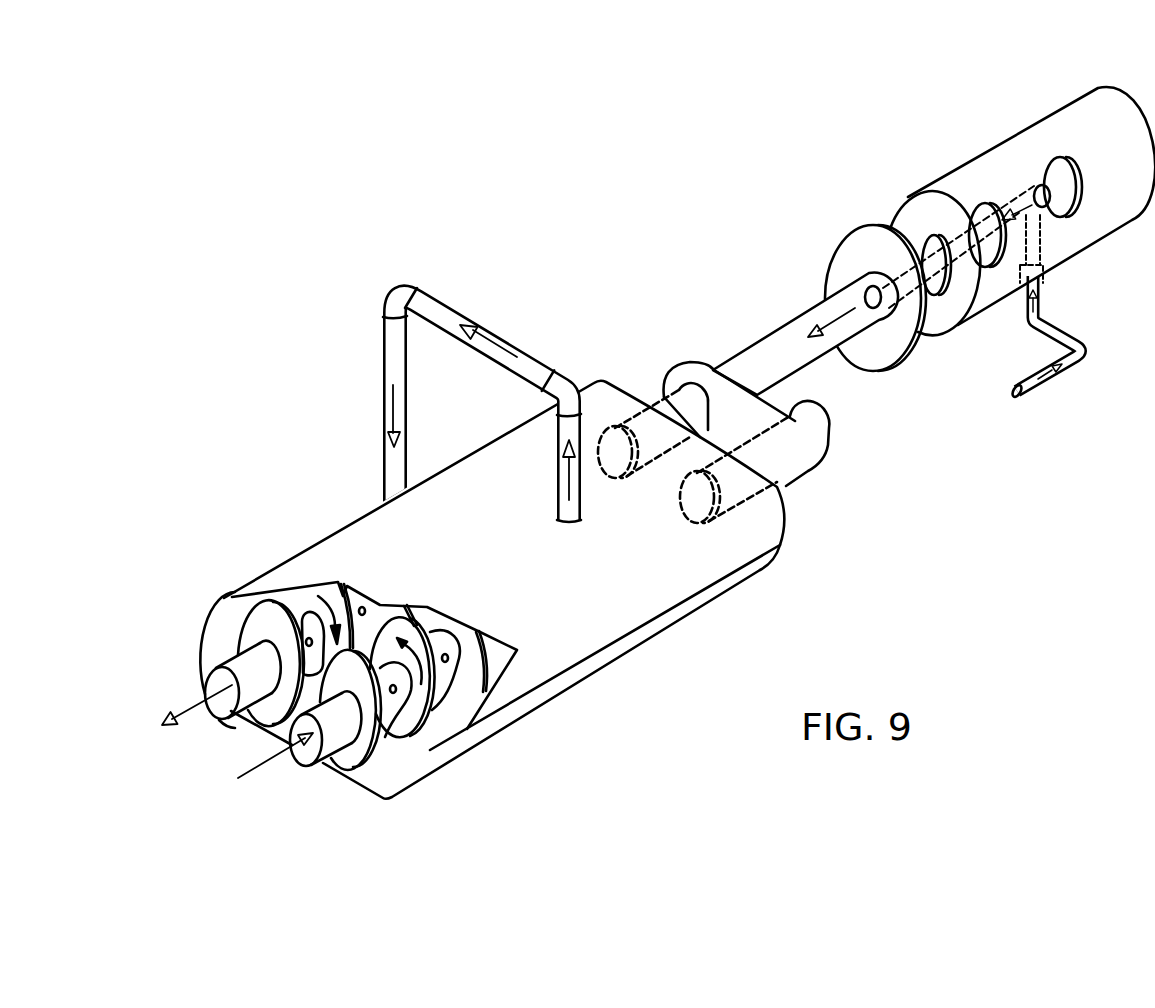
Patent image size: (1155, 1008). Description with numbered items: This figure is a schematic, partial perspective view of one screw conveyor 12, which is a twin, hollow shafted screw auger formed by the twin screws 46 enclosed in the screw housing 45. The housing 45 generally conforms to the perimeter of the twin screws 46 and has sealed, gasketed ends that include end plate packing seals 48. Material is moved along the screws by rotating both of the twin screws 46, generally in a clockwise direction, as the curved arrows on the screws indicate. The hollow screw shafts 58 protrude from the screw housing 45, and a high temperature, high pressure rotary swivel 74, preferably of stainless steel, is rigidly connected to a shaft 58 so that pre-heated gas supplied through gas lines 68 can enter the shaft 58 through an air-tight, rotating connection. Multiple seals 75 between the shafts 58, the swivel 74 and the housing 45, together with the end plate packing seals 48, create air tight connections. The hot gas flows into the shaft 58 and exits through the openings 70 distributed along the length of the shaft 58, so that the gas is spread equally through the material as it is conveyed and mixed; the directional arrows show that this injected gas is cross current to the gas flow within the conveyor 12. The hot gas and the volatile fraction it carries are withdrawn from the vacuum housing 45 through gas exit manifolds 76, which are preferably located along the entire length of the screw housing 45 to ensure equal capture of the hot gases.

The screw conveyor 12 is at (318, 516).
The screw housing 45 is at (640, 612).
The twin screws 46 is at (253, 618).
The end plate packing seals 48 is at (679, 500).
The screw shafts 58 is at (823, 360).
The gas lines 68 is at (1086, 363).
The openings 70 is at (447, 660).
The rotary swivel 74 is at (1073, 104).
The seals 75 is at (921, 195).
The gas exit manifolds 76 is at (443, 302).